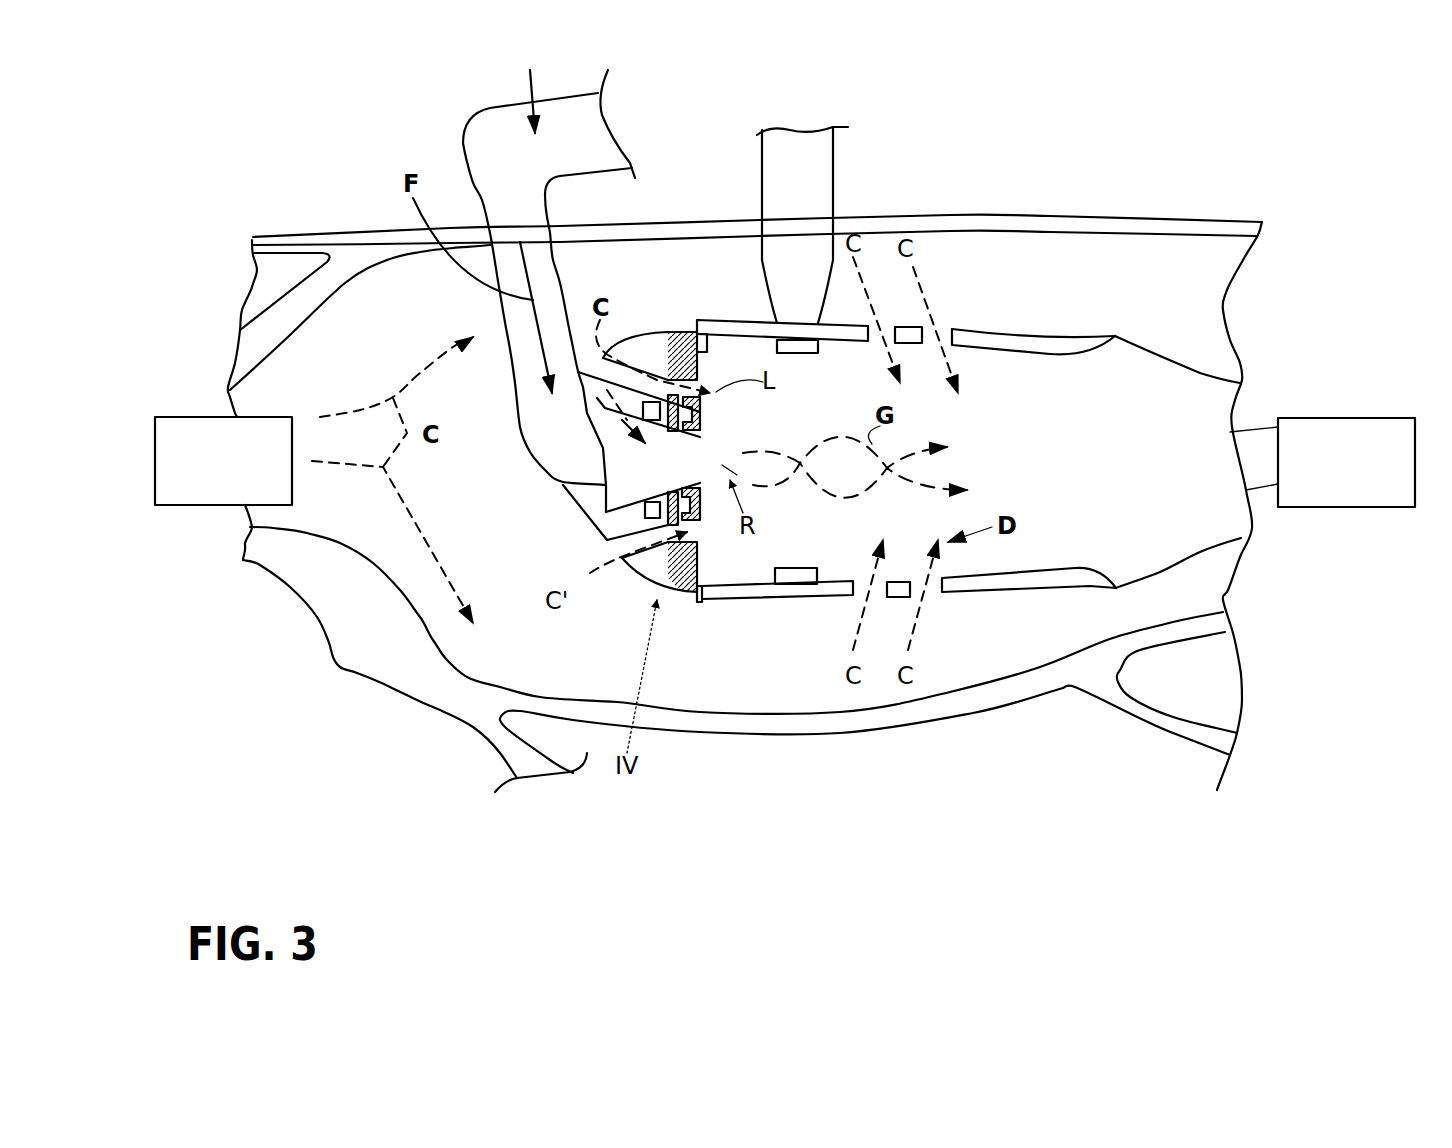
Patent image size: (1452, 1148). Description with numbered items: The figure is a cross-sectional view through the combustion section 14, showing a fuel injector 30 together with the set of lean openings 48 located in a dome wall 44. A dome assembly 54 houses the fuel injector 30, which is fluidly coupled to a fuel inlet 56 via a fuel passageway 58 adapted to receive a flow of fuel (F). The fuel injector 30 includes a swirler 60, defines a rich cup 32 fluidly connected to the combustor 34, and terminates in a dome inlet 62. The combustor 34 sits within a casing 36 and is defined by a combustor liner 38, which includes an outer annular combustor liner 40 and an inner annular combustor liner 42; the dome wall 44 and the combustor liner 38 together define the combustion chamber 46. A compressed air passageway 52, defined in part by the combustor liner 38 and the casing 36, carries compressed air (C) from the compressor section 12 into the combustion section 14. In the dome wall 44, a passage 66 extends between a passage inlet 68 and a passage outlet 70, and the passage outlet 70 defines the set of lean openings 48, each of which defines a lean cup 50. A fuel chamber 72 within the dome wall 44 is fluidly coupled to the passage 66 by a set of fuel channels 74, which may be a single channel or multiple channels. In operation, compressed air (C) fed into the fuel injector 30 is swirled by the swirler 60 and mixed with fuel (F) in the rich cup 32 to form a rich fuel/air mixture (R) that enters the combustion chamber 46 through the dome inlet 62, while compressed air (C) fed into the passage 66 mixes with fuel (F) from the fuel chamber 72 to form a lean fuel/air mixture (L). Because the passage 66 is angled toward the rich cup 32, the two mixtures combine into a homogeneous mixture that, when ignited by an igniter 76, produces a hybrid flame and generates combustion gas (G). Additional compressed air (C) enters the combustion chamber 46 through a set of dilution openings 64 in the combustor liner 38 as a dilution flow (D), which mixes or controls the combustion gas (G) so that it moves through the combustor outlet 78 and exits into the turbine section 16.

The compressor section 12 is at (208, 474).
The combustion section 14 is at (320, 106).
The turbine section 16 is at (1326, 477).
The fuel injector 30 is at (603, 537).
The rich cup 32 is at (682, 473).
The combustor 34 is at (977, 308).
The casing 36 is at (1077, 217).
The combustor liner 38 is at (1033, 330).
The outer annular combustor liner 40 is at (1060, 350).
The inner annular combustor liner 42 is at (997, 592).
The dome wall 44 is at (681, 594).
The combustion chamber 46 is at (1050, 465).
The set of lean openings 48 is at (706, 535).
The lean cup 50 is at (706, 360).
The compressed air passageway 52 is at (802, 683).
The dome assembly 54 is at (575, 510).
The fuel inlet 56 is at (549, 115).
The fuel passageway 58 is at (550, 325).
The swirler 60 is at (652, 402).
The dome inlet 62 is at (700, 451).
The set of dilution openings 64 is at (942, 322).
The passage 66 is at (623, 368).
The passage inlet 68 is at (605, 565).
The passage outlet 70 is at (712, 530).
The fuel chamber 72 is at (687, 418).
The set of fuel channels 74 is at (677, 532).
The igniter 76 is at (797, 273).
The combustor outlet 78 is at (1173, 465).